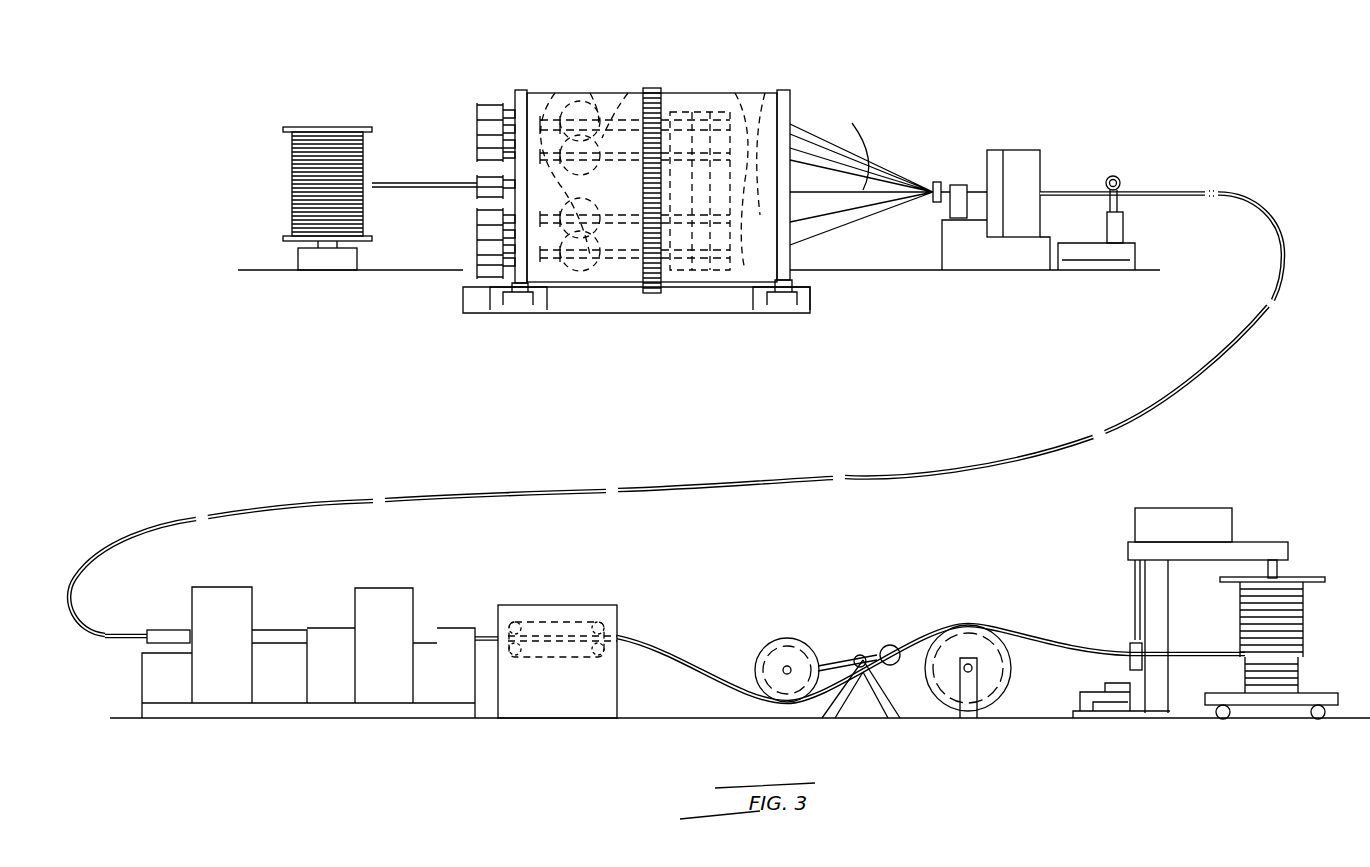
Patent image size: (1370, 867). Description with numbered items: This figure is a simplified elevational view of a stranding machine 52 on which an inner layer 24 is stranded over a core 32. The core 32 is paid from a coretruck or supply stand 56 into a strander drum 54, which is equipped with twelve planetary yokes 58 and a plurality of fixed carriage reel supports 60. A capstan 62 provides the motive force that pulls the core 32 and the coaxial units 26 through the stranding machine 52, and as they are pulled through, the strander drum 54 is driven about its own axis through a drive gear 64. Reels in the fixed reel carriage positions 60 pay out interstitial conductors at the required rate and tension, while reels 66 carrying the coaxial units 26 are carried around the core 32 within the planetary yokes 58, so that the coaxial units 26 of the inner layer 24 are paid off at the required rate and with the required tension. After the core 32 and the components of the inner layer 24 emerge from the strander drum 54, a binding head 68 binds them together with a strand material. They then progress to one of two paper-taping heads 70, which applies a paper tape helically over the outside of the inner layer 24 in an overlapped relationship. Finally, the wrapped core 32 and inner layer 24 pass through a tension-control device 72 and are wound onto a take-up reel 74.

The inner layer 24 is at (1073, 192).
The coaxial units 26 is at (852, 150).
The core 32 is at (430, 183).
The stranding machine 52 is at (1123, 104).
The strander drum 54 is at (594, 88).
The supply stand 56 is at (283, 152).
The planetary yokes 58 is at (632, 112).
The fixed carriage reel supports 60 is at (477, 262).
The capstan 62 is at (590, 605).
The drive gear 64 is at (655, 95).
The reels 66 is at (555, 93).
The binding head 68 is at (1018, 150).
The paper-taping heads 70 is at (355, 588).
The tension-control device 72 is at (862, 655).
The take-up reel 74 is at (1300, 578).